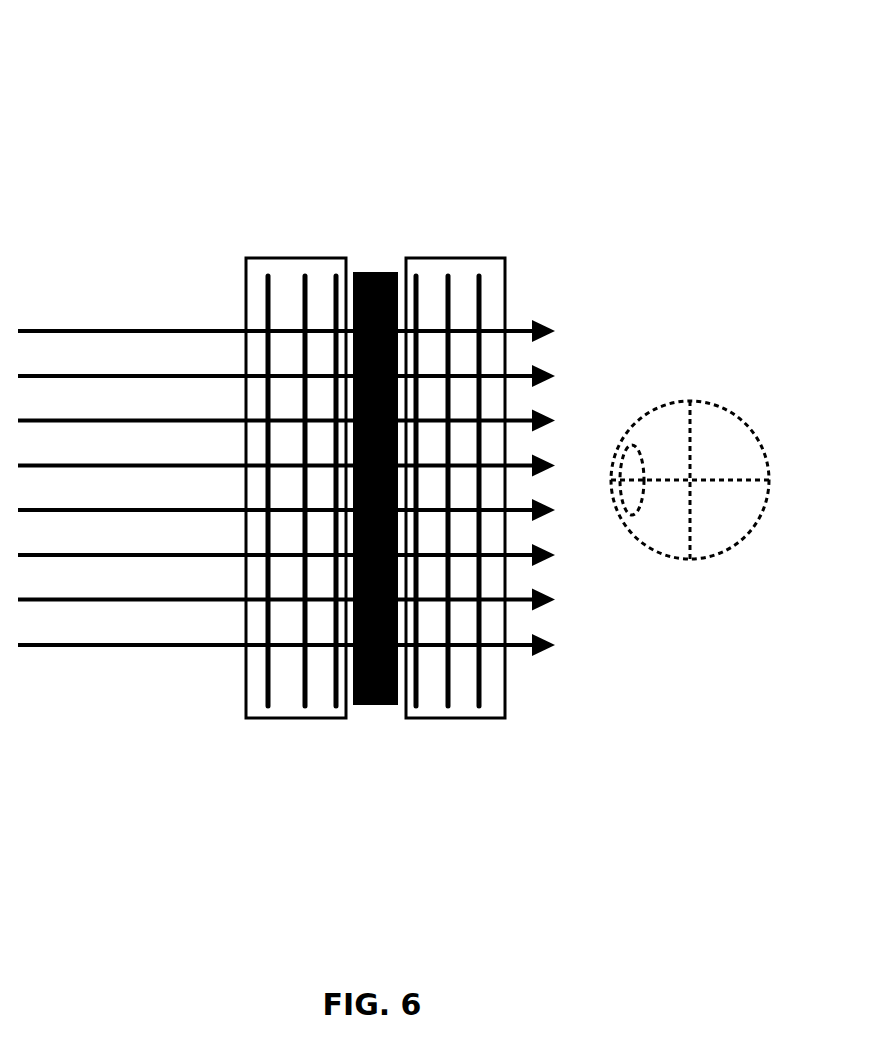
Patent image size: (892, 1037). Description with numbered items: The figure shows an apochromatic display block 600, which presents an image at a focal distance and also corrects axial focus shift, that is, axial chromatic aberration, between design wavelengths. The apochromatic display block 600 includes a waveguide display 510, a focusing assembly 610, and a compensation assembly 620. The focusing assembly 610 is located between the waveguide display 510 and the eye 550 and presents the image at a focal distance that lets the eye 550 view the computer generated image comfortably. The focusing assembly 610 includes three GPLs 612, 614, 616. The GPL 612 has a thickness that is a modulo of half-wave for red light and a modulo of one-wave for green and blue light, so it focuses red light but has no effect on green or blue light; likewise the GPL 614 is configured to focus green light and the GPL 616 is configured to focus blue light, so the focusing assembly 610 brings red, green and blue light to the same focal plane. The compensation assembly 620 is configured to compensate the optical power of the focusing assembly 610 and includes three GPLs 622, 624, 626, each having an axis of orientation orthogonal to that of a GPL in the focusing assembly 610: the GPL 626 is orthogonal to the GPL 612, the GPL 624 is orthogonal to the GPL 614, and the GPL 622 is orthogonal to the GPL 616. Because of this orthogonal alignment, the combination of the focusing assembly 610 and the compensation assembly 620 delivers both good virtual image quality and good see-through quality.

The apochromatic display block 600 is at (23, 33).
The compensation assembly 620 is at (297, 718).
The GPL 622 is at (265, 275).
The GPL 624 is at (305, 275).
The GPL 626 is at (337, 275).
The waveguide display 510 is at (377, 705).
The focusing assembly 610 is at (452, 718).
The GPL 612 is at (417, 277).
The GPL 614 is at (455, 273).
The GPL 616 is at (485, 302).
The eye 550 is at (710, 553).